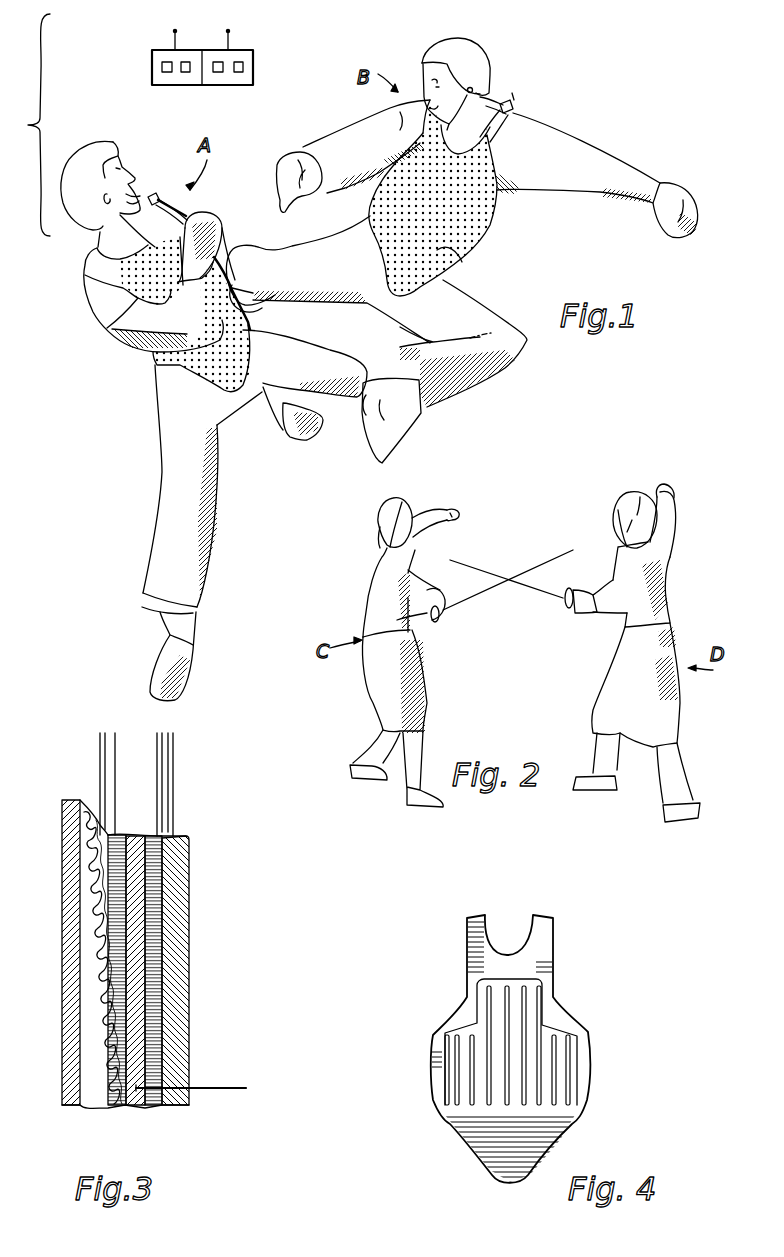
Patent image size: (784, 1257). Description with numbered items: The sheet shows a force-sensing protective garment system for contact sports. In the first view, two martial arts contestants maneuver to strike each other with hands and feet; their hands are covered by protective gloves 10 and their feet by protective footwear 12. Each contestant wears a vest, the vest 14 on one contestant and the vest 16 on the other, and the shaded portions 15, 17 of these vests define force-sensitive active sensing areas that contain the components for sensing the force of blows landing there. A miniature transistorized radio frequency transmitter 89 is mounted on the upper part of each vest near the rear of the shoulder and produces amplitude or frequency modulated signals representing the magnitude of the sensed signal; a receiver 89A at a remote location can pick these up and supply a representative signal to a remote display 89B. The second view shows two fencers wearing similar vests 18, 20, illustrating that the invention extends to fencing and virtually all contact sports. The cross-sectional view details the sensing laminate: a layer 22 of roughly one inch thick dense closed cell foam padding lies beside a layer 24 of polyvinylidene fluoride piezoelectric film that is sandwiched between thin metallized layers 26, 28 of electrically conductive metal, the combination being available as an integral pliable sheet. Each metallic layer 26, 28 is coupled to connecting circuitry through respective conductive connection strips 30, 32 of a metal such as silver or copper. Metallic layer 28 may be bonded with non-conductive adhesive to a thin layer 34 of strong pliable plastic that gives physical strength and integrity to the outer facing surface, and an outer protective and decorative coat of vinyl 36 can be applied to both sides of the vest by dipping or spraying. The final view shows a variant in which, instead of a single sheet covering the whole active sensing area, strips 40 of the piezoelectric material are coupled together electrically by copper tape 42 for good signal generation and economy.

In FIG. 1, the receiver 89A is at (162, 50).
In FIG. 1, the remote display 89B is at (185, 73).
In FIG. 1, the radio frequency transmitter 89 is at (157, 192).
In FIG. 1, the protective gloves 10 is at (290, 163).
In FIG. 1, the protective footwear 12 is at (291, 434).
In FIG. 1, the vest 14 is at (488, 248).
In FIG. 1, the shaded portion 15 is at (460, 260).
In FIG. 1, the vest 16 is at (256, 309).
In FIG. 1, the shaded portion 17 is at (111, 329).
In FIG. 2, the vest 18 is at (447, 613).
In FIG. 2, the vest 20 is at (620, 627).
In FIG. 3, the layer of protective padding material 22 is at (80, 1082).
In FIG. 3, the layer of piezoelectric film 24 is at (140, 1112).
In FIG. 3, the metallized layer 26 is at (110, 1108).
In FIG. 3, the metallized layer 28 is at (155, 1108).
In FIG. 3, the conductive connection strip 30 is at (102, 758).
In FIG. 3, the conductive connection strip 32 is at (174, 763).
In FIG. 3, the layer of pliable plastic material 34 is at (168, 1106).
In FIG. 3, the outer protective and decorative coat of vinyl 36 is at (60, 1010).
In FIG. 4, the strips of KYNAR material 40 is at (528, 1015).
In FIG. 4, the copper tape 42 is at (517, 980).